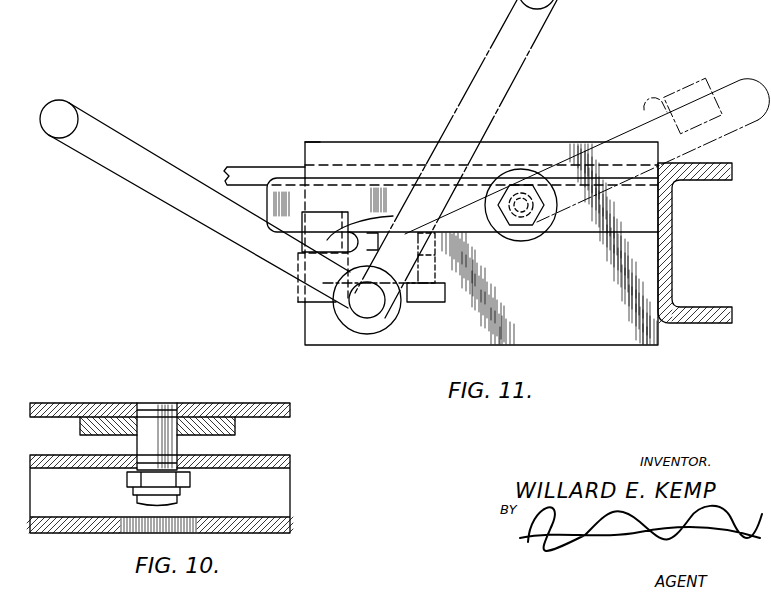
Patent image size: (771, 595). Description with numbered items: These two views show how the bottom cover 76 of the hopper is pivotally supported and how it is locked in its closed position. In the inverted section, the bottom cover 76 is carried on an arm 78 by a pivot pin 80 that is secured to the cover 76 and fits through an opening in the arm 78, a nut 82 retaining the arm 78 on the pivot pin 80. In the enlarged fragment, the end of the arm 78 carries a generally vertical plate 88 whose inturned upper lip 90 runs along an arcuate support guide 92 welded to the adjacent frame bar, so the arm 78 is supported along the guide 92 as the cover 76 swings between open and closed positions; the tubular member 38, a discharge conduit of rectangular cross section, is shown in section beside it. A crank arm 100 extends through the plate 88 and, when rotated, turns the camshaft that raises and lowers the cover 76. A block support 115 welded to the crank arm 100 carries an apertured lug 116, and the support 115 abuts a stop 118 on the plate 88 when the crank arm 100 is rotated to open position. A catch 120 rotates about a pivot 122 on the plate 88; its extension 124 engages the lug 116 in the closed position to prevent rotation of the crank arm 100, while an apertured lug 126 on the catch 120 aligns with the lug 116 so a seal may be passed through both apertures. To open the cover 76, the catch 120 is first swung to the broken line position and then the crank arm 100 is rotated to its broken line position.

In FIG. 11, the tubular member 38 is at (690, 323).
In FIG. 10, the bottom cover 76 is at (218, 403).
In FIG. 10, the arm 78 is at (272, 455).
In FIG. 10, the pivot pin 80 is at (178, 447).
In FIG. 10, the nut 82 is at (188, 480).
In FIG. 11, the vertical plate 88 is at (630, 345).
In FIG. 11, the inturned upper lip 90 is at (305, 142).
In FIG. 11, the arcuate support guide 92 is at (272, 167).
In FIG. 11, the crank arm 100 is at (136, 185).
In FIG. 11, the block support 115 is at (297, 297).
In FIG. 11, the apertured lug 116 is at (375, 225).
In FIG. 11, the stop 118 is at (425, 302).
In FIG. 11, the catch 120 is at (330, 192).
In FIG. 11, the pivot 122 is at (528, 215).
In FIG. 11, the extension 124 is at (368, 242).
In FIG. 11, the apertured lug 126 is at (332, 212).